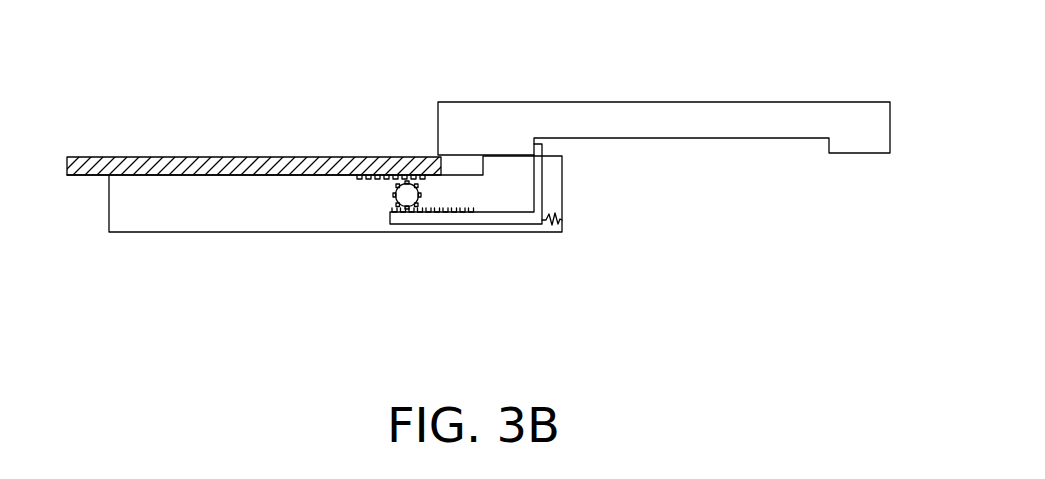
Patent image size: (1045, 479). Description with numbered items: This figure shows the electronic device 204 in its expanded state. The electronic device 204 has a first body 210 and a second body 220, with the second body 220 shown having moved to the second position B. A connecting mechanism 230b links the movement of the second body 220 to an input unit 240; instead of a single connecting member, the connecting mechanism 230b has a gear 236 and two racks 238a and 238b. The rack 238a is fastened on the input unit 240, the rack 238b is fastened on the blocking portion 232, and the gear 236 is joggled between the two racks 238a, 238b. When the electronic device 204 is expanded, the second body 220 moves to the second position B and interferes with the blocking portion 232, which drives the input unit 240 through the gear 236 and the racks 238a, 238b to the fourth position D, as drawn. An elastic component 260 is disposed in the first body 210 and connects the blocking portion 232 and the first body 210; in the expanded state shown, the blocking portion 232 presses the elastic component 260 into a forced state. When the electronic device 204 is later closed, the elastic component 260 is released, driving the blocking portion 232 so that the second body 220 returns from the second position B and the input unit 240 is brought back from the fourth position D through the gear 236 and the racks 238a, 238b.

The electronic device 204 is at (476, 186).
The first body 210 is at (193, 233).
The second body 220 is at (782, 102).
The connecting mechanism 230b is at (421, 249).
The blocking portion 232 is at (501, 225).
The gear 236 is at (406, 195).
The rack 238a is at (359, 181).
The rack 238b is at (425, 211).
The input unit 240 is at (180, 157).
The elastic component 260 is at (555, 213).
The fourth position D is at (64, 165).
The second position B is at (895, 117).